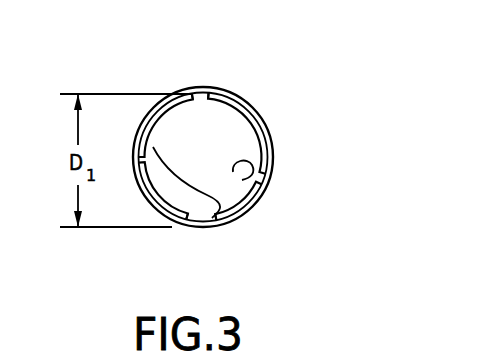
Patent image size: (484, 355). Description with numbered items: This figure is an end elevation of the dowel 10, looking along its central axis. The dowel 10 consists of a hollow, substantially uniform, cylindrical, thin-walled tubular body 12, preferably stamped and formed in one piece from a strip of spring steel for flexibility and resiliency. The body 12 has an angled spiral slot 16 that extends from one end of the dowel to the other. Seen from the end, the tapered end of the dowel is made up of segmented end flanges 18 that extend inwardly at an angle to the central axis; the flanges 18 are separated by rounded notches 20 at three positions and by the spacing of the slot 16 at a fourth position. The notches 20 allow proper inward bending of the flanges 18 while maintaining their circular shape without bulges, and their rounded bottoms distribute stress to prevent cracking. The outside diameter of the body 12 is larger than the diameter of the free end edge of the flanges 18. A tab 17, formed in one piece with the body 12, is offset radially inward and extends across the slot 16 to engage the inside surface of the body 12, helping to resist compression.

The dowel 10 is at (270, 90).
The tubular body 12 is at (228, 88).
The spiral slot 16 is at (270, 118).
The tab 17 is at (262, 186).
The segmented end flanges 18 is at (140, 112).
The notches 20 is at (163, 106).